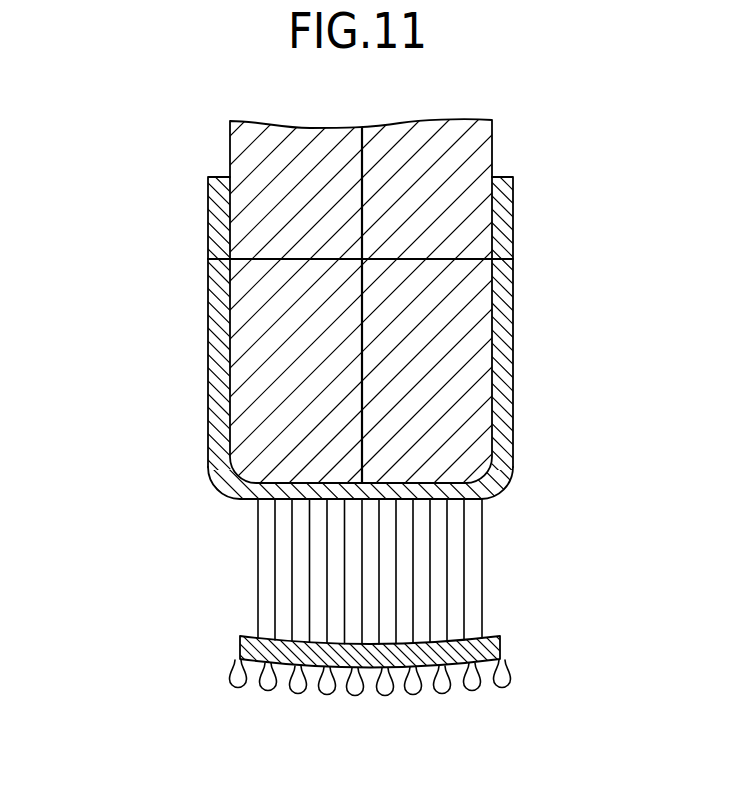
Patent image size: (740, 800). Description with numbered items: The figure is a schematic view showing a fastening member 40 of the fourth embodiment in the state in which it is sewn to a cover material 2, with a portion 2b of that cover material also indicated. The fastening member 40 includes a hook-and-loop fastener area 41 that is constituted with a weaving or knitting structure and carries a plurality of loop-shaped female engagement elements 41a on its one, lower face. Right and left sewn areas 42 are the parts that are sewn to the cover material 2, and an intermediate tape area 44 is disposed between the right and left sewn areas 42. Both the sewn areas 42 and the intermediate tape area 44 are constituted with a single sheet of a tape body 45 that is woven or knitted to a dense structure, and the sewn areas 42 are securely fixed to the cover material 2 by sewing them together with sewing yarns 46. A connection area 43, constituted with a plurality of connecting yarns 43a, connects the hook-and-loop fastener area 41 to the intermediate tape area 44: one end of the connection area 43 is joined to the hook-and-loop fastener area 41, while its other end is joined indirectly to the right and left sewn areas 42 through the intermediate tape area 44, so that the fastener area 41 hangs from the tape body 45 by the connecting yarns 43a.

The cover material 2 is at (333, 285).
The lower portion of workpiece 2b is at (286, 317).
The fastening member 40 is at (335, 477).
The hook-and-loop fastener area 41 is at (502, 651).
The female engagement elements 41a is at (472, 687).
The sewn areas 42 is at (212, 378).
The connection area 43 is at (509, 495).
The connecting yarns 43a is at (252, 596).
The intermediate tape area 44 is at (233, 488).
The tape body 45 is at (208, 232).
The sewing yarns 46 is at (443, 260).